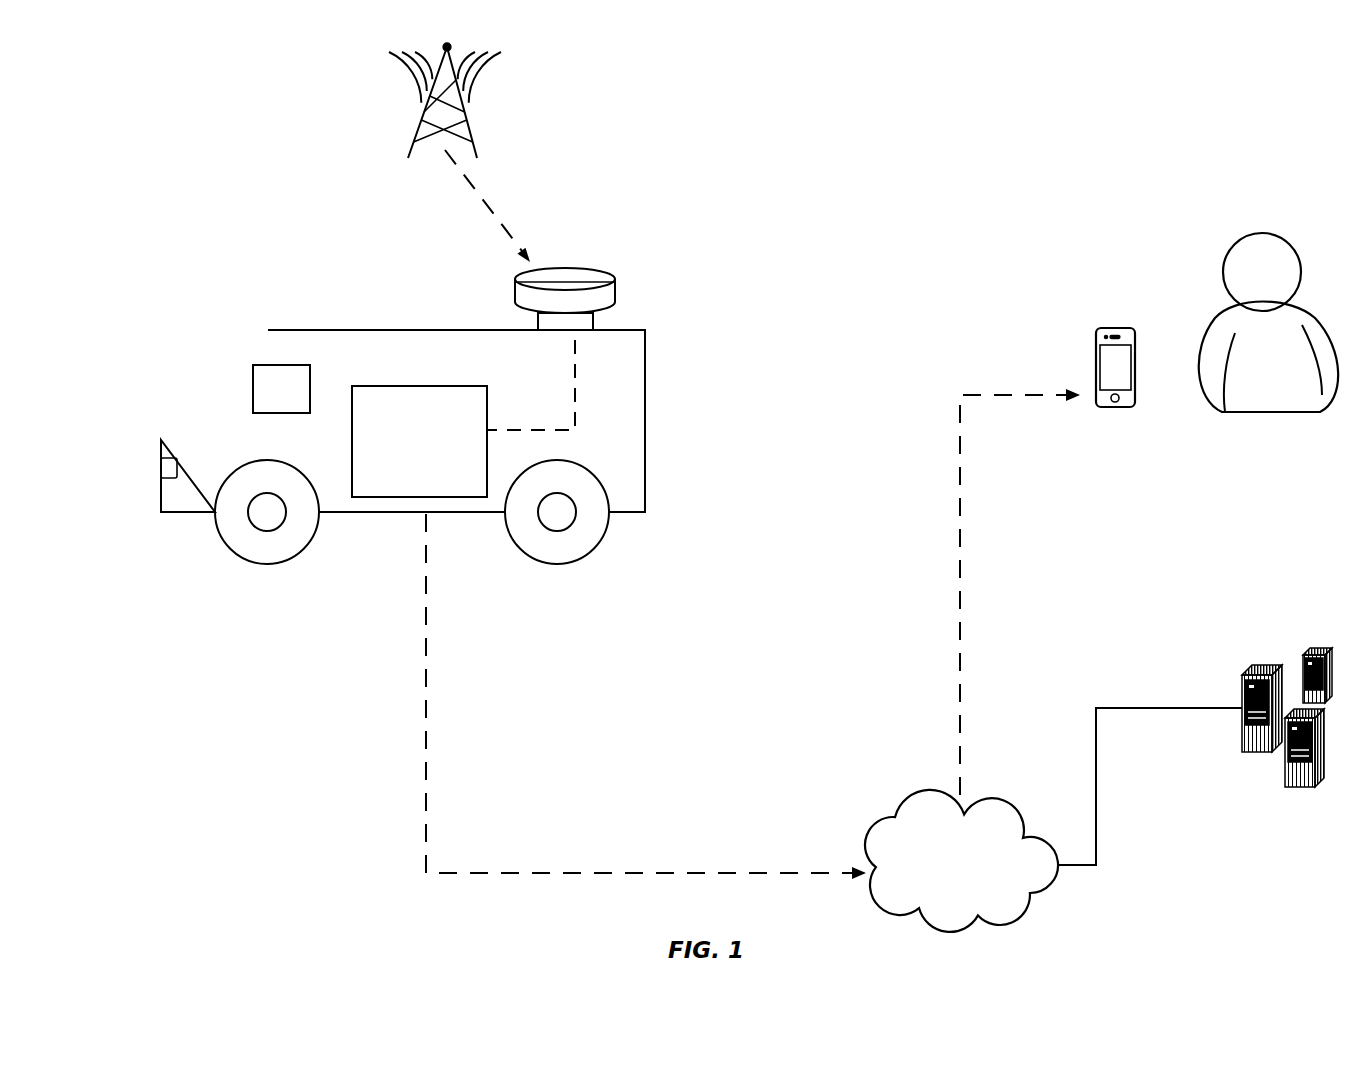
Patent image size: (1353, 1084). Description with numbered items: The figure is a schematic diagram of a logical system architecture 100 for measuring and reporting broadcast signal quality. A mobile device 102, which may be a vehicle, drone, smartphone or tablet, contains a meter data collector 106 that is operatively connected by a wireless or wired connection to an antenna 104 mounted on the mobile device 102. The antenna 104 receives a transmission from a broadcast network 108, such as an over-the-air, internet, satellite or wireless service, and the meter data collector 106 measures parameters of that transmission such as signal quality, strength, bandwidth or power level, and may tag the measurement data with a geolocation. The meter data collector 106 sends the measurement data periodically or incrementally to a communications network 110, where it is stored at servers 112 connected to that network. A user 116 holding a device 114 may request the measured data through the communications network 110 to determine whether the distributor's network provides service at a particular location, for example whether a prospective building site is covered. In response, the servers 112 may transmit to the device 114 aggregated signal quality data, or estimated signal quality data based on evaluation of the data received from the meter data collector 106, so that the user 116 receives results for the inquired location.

The logical system architecture 100 is at (153, 130).
The mobile device 102 is at (226, 376).
The antenna 104 is at (614, 282).
The meter data collector 106 is at (400, 477).
The broadcast network 108 is at (577, 135).
The communications network 110 is at (942, 903).
The servers 112 is at (1267, 858).
The device 114 is at (1128, 328).
The user 116 is at (1233, 246).